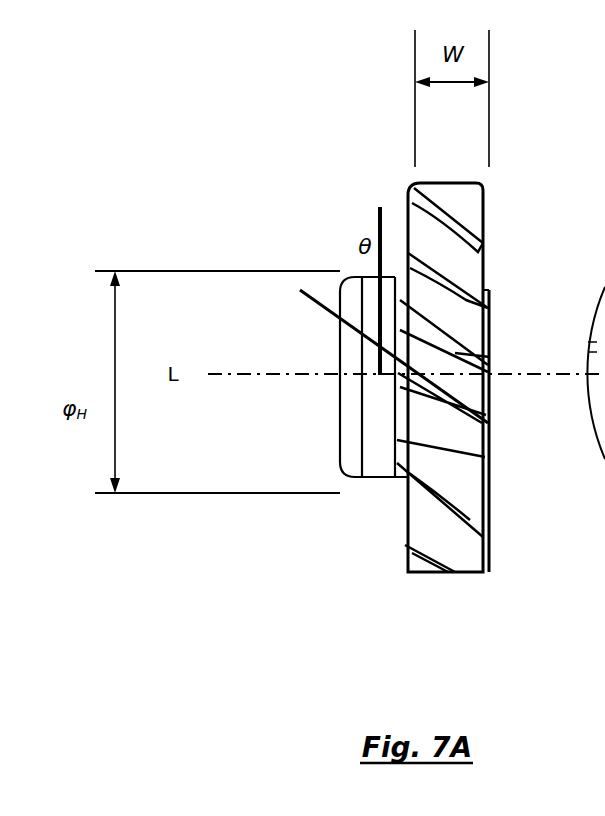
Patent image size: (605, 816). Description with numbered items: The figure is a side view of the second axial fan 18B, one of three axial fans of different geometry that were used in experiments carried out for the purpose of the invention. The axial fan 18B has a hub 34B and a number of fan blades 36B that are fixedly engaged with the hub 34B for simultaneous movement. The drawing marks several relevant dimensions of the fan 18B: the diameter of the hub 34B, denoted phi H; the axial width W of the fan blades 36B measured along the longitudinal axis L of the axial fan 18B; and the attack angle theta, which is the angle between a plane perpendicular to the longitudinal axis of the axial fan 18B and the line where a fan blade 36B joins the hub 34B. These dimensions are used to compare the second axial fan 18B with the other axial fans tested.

The second axial fan 18B is at (413, 218).
The hub 34B is at (383, 467).
The fan blades 36B is at (470, 265).